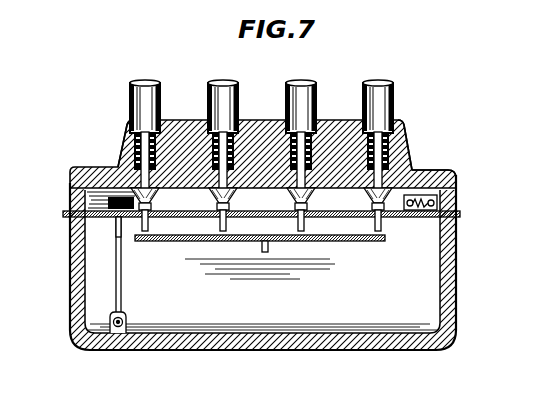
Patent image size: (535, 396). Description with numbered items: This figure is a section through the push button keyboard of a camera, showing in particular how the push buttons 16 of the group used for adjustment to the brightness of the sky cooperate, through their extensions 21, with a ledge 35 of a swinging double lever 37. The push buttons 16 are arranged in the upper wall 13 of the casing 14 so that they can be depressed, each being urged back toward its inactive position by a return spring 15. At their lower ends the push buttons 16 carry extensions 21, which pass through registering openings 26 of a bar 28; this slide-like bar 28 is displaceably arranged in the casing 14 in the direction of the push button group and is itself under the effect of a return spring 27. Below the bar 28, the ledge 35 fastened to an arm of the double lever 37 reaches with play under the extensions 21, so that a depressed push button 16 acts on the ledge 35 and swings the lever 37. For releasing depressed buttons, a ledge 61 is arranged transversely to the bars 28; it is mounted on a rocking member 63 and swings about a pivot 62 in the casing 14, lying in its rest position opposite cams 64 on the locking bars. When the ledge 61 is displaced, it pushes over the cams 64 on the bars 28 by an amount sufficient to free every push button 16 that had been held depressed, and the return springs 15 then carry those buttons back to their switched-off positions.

The upper wall 13 is at (106, 169).
The casing 14 is at (457, 271).
The return spring 15 is at (124, 140).
The push button 16 is at (210, 92).
The extension 21 is at (222, 222).
The opening 26 is at (167, 209).
The return spring 27 is at (438, 171).
The bar 28 is at (455, 222).
The ledge 35 is at (193, 238).
The swinging double lever 37 is at (266, 251).
The ledge 61 is at (117, 229).
The pivot 62 is at (127, 319).
The rocking member 63 is at (122, 273).
The cam 64 is at (69, 195).